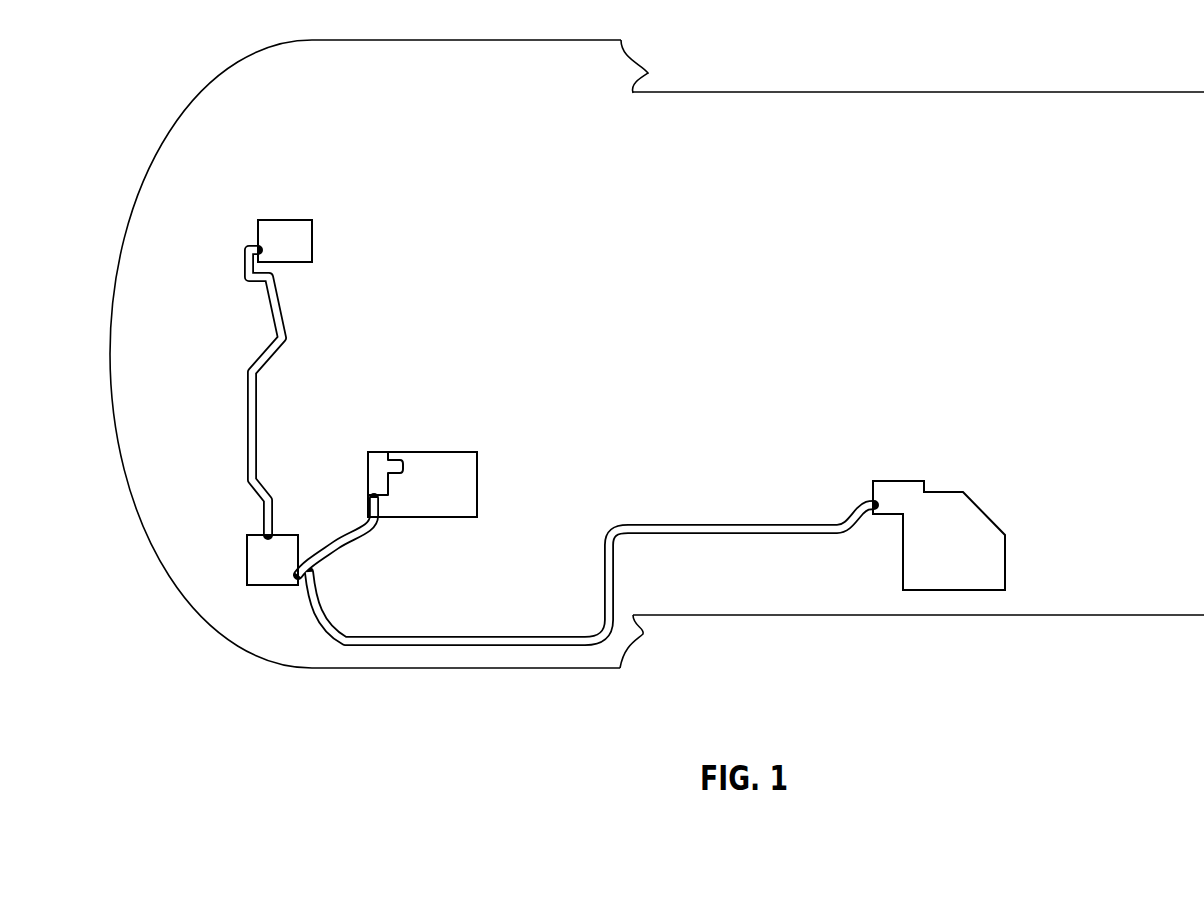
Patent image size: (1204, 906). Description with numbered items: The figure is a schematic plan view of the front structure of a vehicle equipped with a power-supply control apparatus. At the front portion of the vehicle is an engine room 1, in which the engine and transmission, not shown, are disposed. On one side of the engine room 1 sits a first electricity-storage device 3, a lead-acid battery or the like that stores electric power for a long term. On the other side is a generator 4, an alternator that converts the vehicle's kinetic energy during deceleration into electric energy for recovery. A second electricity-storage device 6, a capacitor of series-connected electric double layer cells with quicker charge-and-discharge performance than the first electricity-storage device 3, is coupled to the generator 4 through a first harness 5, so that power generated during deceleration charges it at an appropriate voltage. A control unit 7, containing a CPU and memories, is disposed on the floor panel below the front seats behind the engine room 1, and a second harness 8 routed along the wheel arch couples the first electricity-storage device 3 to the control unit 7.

The engine room 1 is at (447, 306).
The first electricity-storage device 3 is at (430, 452).
The generator 4 is at (277, 220).
The first harness 5 is at (248, 415).
The second electricity-storage device 6 is at (247, 557).
The control unit 7 is at (972, 522).
The second harness 8 is at (468, 632).